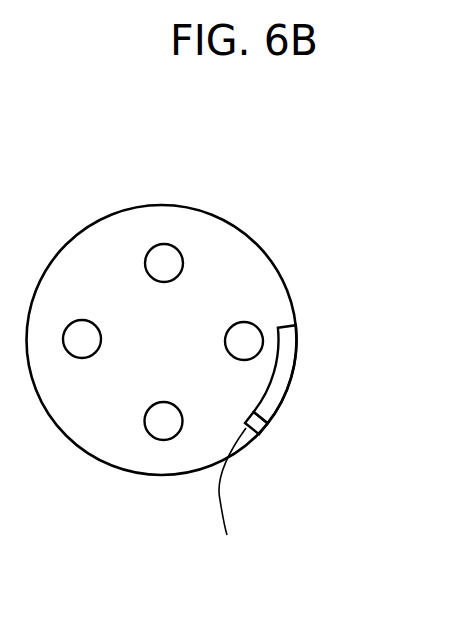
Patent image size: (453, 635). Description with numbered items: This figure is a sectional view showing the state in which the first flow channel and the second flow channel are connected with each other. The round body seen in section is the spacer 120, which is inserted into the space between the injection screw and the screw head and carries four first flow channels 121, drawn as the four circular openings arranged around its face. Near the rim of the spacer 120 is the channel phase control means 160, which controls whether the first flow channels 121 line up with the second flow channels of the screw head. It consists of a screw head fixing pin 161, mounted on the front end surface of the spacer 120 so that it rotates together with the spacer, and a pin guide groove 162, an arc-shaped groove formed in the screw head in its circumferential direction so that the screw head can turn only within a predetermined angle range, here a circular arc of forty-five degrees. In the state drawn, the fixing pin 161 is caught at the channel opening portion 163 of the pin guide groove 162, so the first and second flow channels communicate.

The spacer 120 is at (260, 270).
The first flow channel 121 is at (157, 245).
The channel phase control means 160 is at (268, 448).
The screw head fixing pin 161 is at (267, 430).
The pin guide groove 162 is at (290, 343).
The channel opening portion 163 is at (228, 501).